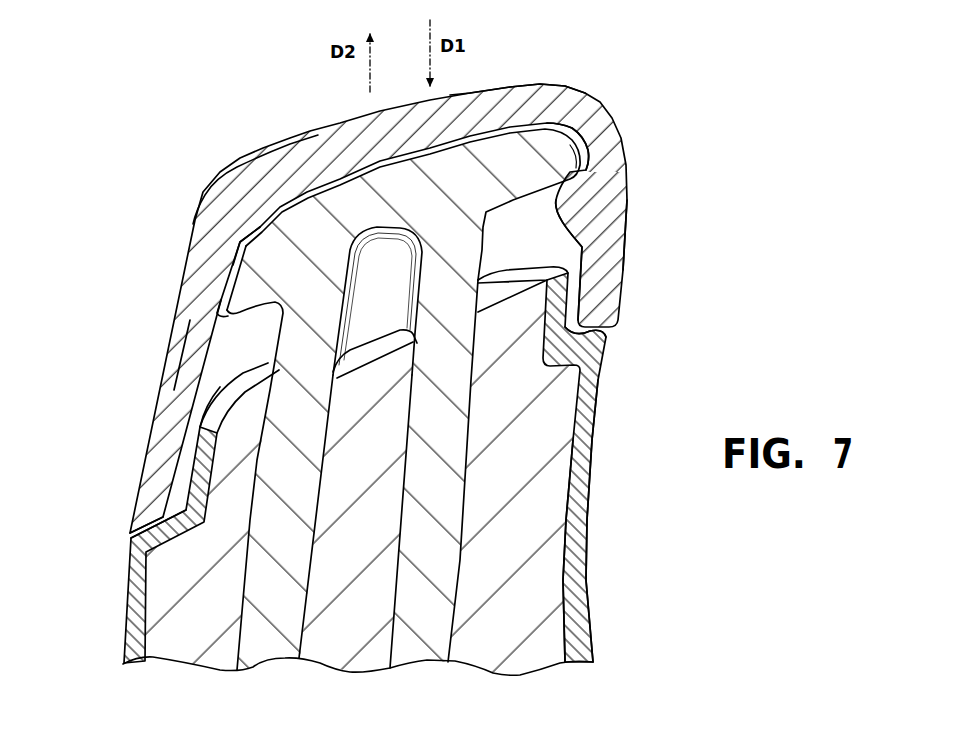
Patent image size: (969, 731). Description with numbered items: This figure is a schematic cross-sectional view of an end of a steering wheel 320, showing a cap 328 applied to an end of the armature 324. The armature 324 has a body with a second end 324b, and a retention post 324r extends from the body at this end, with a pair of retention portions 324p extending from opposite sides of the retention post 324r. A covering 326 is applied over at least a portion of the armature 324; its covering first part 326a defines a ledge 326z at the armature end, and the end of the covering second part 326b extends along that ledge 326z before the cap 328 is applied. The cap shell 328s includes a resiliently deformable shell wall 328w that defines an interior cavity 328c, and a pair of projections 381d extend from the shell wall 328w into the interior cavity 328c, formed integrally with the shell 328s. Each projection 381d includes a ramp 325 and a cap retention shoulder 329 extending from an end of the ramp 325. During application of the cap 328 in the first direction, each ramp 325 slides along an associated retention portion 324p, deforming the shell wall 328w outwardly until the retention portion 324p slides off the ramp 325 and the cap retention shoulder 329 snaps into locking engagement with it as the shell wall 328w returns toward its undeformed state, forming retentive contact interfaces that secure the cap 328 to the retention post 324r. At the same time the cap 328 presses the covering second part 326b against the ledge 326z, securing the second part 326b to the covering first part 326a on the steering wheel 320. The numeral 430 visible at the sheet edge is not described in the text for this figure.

The steering wheel 320 is at (108, 628).
The armature 324 is at (278, 603).
The retention portion 324p is at (246, 290).
The retention post 324r is at (287, 358).
The second end 324b is at (277, 533).
The ramp 325 is at (613, 210).
The covering 326 is at (591, 557).
The covering first part 326a is at (549, 588).
The covering second part 326b is at (580, 500).
The ledge 326z is at (609, 335).
The cap 328 is at (229, 158).
The cap shell 328s is at (199, 194).
The interior cavity 328c is at (241, 234).
The shell wall 328w is at (508, 110).
The cap retention shoulder 329 is at (583, 135).
The projection 381d is at (193, 347).
The element 430 is at (563, 727).